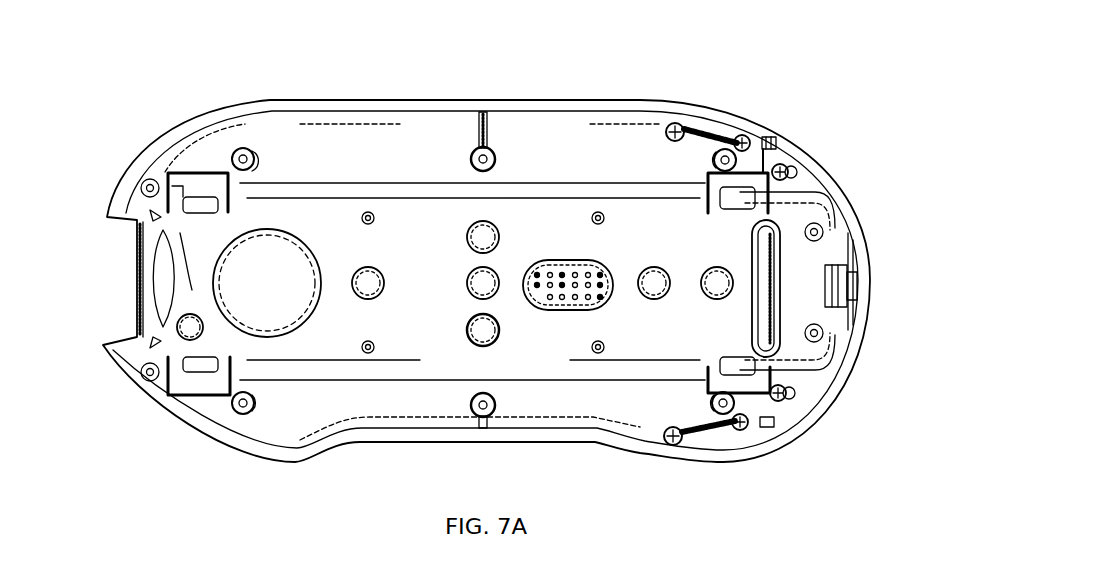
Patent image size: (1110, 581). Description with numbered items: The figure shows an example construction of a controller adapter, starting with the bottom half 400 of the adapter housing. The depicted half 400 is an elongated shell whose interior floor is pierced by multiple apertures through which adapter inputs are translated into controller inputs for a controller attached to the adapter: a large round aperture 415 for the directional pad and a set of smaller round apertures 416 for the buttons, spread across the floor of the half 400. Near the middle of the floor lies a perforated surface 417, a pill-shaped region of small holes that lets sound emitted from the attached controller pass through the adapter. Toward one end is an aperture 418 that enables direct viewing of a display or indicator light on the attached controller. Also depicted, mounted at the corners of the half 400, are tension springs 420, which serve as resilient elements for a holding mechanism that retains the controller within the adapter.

The bottom half of the housing 400 is at (115, 199).
The aperture for the directional pad 415 is at (281, 275).
The apertures for the buttons 416 is at (192, 316).
The perforated surface 417 is at (563, 272).
The aperture for viewing display or indicator light 418 is at (765, 136).
The tension springs 420 is at (686, 128).